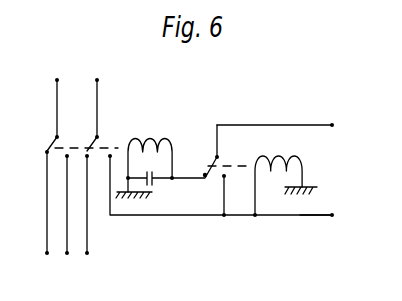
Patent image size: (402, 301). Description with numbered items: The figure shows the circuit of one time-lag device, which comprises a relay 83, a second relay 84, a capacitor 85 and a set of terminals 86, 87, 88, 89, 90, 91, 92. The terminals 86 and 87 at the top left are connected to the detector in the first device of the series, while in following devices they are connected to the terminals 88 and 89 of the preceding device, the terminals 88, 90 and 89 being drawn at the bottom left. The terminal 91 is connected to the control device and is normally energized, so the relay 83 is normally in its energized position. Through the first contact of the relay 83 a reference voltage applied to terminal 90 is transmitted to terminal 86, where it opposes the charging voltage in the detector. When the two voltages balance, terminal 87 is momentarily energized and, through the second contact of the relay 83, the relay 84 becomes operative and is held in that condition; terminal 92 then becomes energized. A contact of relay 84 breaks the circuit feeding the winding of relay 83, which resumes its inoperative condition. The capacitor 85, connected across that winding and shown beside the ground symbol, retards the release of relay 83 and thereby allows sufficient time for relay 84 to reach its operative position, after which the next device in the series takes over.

The relay 83 is at (150, 138).
The relay 84 is at (302, 160).
The capacitor 85 is at (154, 180).
The terminal 86 is at (58, 80).
The terminal 87 is at (98, 80).
The terminal 88 is at (46, 254).
The terminal 89 is at (88, 255).
The terminal 90 is at (67, 255).
The terminal 91 is at (333, 124).
The terminal 92 is at (333, 214).